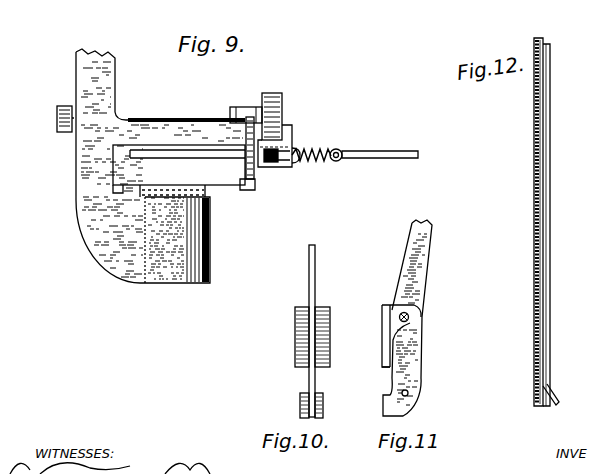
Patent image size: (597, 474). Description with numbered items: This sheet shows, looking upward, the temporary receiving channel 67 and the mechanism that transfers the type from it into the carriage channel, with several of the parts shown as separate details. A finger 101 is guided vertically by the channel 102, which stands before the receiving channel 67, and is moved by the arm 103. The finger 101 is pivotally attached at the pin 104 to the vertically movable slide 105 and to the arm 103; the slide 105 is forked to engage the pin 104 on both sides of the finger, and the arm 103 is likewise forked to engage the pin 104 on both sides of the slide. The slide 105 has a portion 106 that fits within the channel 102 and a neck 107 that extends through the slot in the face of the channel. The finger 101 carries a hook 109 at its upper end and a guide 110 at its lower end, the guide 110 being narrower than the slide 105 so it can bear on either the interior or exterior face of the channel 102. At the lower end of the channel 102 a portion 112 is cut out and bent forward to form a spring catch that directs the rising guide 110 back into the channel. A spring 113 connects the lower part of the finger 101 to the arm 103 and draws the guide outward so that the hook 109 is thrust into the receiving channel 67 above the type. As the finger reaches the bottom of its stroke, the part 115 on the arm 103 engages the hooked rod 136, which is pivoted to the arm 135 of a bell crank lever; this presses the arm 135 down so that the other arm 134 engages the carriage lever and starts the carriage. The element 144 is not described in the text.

In FIG. 9, the temporary receiving channel 67 is at (187, 165).
In FIG. 11, the finger 101 is at (426, 272).
In FIG. 9, the channel 102 is at (256, 180).
In FIG. 12, the channel 102 is at (549, 206).
In FIG. 9, the arm 103 is at (392, 159).
In FIG. 11, the pin 104 is at (422, 318).
In FIG. 10, the slide 105 is at (308, 332).
In FIG. 11, the slide 105 is at (396, 324).
In FIG. 10, the portion 106 is at (300, 323).
In FIG. 11, the portion 106 is at (384, 364).
In FIG. 11, the neck 107 is at (383, 305).
In FIG. 9, the hook 109 is at (179, 171).
In FIG. 9, the guide 110 is at (279, 162).
In FIG. 10, the guide 110 is at (323, 404).
In FIG. 12, the spring catch 112 is at (558, 401).
In FIG. 9, the spring 113 is at (322, 152).
In FIG. 9, the part 115 is at (293, 131).
In FIG. 9, the arm 134 is at (57, 121).
In FIG. 9, the arm 135 is at (263, 100).
In FIG. 9, the hooked rod 136 is at (282, 112).
In FIG. 9, the hatched member 144 is at (162, 260).